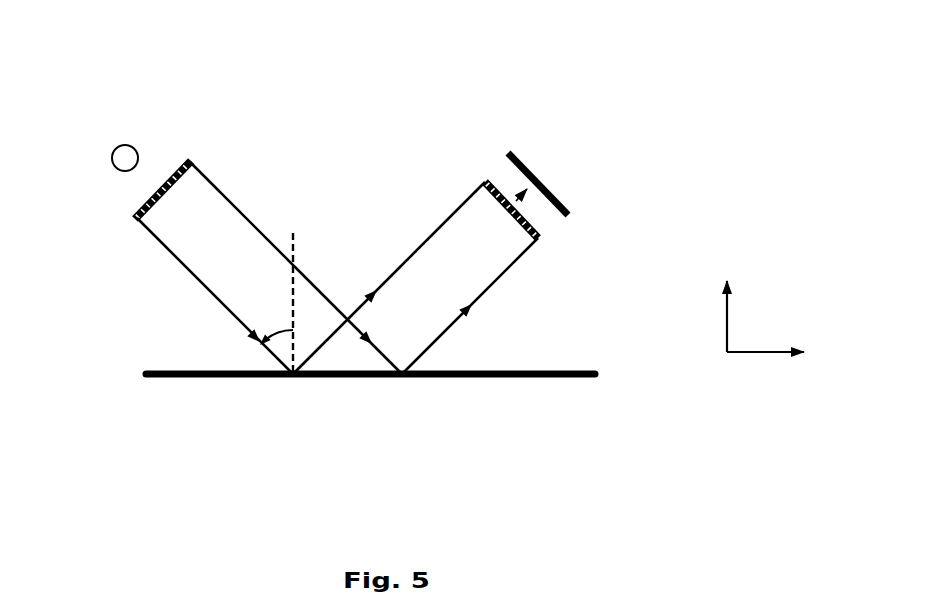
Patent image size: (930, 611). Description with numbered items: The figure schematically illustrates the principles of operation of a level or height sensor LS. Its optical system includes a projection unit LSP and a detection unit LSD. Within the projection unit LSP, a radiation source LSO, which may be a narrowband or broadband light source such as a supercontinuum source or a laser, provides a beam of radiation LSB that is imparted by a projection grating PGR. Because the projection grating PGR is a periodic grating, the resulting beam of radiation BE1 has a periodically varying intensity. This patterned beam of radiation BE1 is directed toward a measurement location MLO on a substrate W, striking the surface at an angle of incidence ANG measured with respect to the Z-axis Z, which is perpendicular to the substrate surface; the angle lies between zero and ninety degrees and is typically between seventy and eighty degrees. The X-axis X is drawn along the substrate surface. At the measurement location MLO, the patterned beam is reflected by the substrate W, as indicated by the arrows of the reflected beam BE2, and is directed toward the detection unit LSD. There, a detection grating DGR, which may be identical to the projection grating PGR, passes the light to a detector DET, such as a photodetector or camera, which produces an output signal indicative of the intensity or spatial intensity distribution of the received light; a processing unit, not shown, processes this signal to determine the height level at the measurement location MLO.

The level sensor LS is at (506, 81).
The radiation source LSO is at (136, 146).
The beam of radiation LSB is at (142, 186).
The projection grating PGR is at (137, 218).
The projection unit LSP is at (254, 196).
The beam of radiation BE1 is at (200, 282).
The angle of incidence ANG is at (271, 303).
The detection unit LSD is at (431, 204).
The reflected beam of radiation BE2 is at (495, 282).
The detection grating DGR is at (540, 240).
The detector DET is at (570, 213).
The measurement location MLO is at (354, 393).
The substrate W is at (413, 432).
The Z-axis Z is at (738, 307).
The X-axis X is at (769, 334).